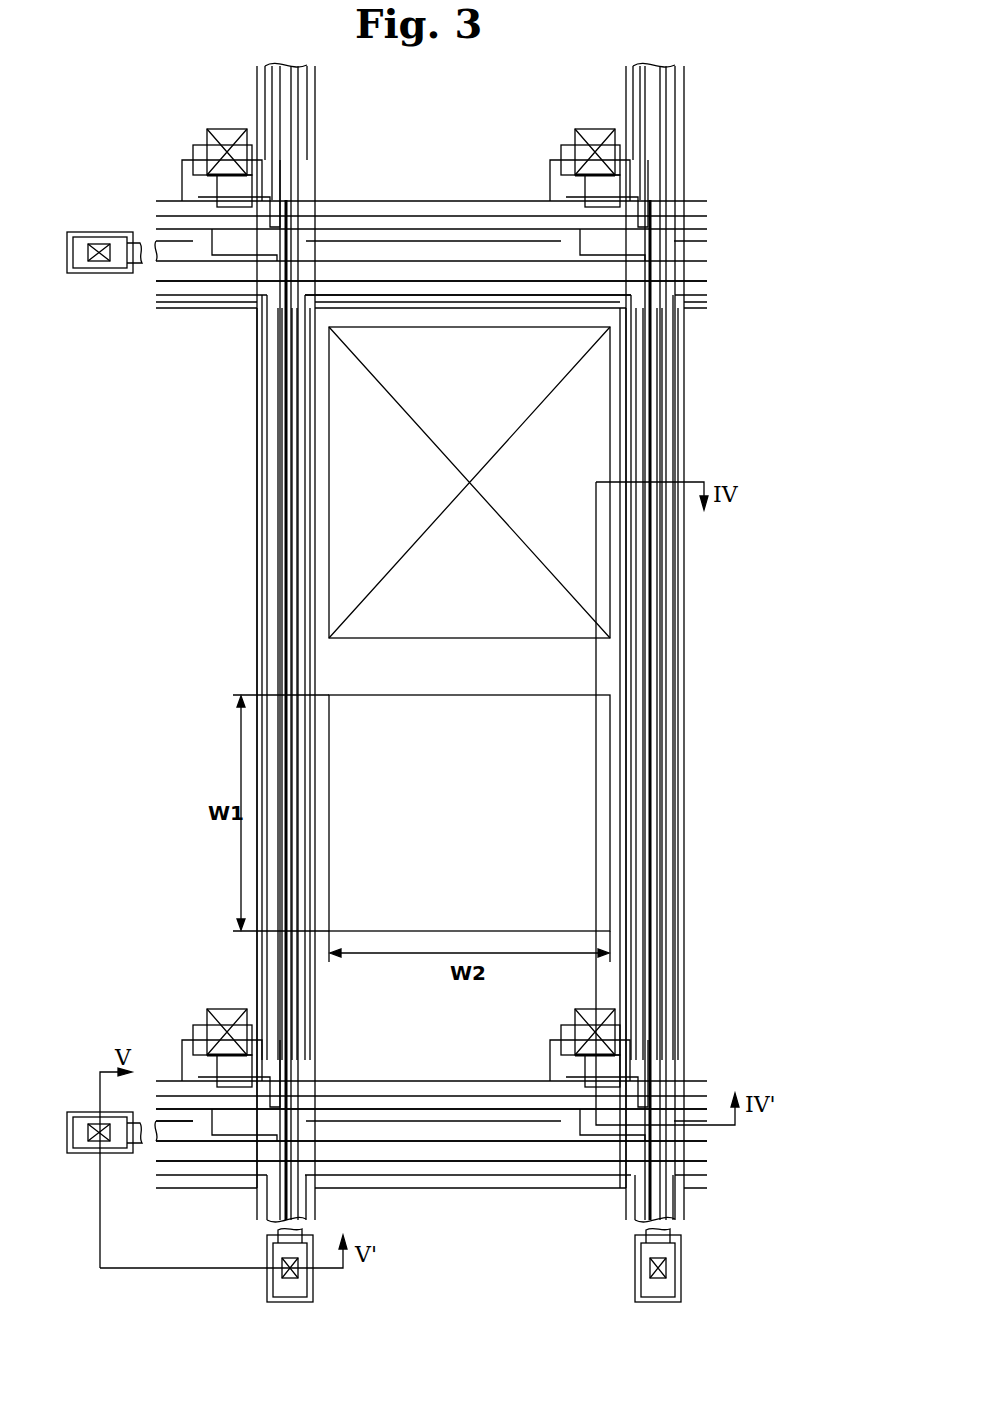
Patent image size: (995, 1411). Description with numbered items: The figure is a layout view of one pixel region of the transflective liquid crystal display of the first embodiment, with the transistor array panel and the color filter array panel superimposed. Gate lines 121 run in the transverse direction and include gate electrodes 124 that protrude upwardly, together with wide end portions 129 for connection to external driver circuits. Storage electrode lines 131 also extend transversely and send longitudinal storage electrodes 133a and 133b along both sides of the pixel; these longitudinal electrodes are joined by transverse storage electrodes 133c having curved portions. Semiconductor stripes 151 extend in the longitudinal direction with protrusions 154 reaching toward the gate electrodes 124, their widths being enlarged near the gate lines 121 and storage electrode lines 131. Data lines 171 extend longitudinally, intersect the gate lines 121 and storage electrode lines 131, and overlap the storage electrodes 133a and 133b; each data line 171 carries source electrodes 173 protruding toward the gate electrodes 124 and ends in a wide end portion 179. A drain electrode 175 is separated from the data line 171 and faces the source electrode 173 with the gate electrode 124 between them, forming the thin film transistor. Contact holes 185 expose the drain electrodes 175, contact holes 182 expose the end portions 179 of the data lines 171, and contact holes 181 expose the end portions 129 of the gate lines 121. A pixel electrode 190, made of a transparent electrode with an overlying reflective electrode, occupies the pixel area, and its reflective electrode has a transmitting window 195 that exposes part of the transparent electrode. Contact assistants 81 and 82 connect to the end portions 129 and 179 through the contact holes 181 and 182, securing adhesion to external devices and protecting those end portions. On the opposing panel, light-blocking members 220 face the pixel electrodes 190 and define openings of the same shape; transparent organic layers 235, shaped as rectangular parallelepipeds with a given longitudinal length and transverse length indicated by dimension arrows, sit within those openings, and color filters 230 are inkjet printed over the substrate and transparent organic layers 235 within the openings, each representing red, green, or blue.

The contact assistant 81 is at (89, 1133).
The contact assistant 82 is at (313, 1284).
The gate line 121 is at (472, 1123).
The gate electrode 124 is at (648, 1082).
The end portion of gate line 129 is at (80, 1118).
The storage electrode line 131 is at (427, 300).
The storage electrode 133a is at (260, 480).
The storage electrode 133b is at (680, 398).
The storage electrode 133c is at (385, 1090).
The semiconductor stripe 151 is at (652, 605).
The protrusion of semiconductor stripe 154 is at (575, 1123).
The data line 171 is at (652, 642).
The source electrode 173 is at (617, 1112).
The drain electrode 175 is at (620, 1023).
The end portion of data line 179 is at (272, 1286).
The contact hole 181 is at (97, 1143).
The contact hole 182 is at (282, 1266).
The contact hole 185 is at (588, 1010).
The pixel electrode 190 is at (640, 548).
The transmitting window 195 is at (613, 518).
The light-blocking member 220 is at (628, 927).
The color filter 230 is at (330, 663).
The transparent organic layer 235 is at (582, 690).